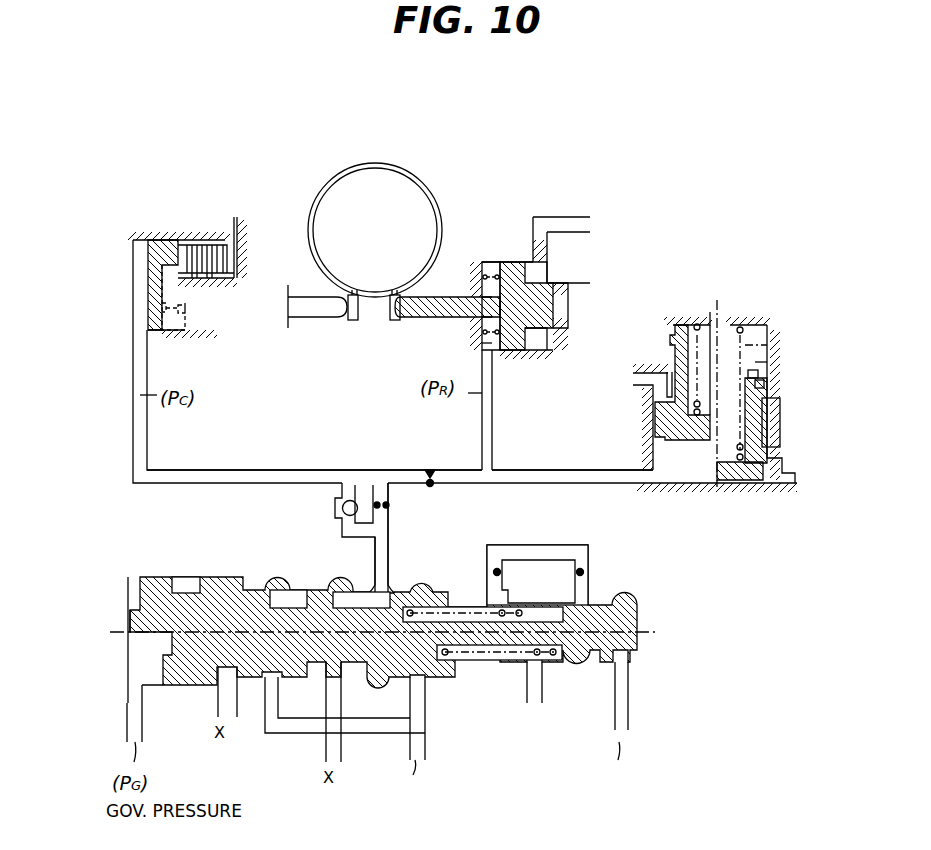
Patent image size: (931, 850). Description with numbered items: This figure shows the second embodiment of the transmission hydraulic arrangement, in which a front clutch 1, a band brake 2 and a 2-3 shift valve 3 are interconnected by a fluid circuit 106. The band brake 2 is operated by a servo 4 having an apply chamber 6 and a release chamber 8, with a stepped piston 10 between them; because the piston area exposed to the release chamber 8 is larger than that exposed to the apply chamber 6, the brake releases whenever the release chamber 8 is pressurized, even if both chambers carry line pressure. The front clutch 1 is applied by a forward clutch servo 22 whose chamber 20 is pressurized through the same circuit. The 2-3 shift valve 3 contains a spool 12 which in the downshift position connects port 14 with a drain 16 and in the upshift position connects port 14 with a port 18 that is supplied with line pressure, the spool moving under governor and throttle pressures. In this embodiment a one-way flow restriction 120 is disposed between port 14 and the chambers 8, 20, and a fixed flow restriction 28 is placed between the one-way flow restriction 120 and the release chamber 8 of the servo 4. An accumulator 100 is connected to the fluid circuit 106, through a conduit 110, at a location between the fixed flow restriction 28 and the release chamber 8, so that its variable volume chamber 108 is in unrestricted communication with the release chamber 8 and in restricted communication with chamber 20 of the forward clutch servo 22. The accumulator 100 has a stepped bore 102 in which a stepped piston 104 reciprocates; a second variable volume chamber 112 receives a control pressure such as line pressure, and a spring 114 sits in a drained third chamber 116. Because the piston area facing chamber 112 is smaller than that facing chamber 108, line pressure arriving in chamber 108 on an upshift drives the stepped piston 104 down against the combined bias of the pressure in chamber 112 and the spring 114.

The front clutch 1 is at (197, 211).
The band brake 2 is at (304, 204).
The chamber 20 is at (133, 272).
The forward clutch servo 22 is at (194, 337).
The servo 4 is at (515, 243).
The stepped piston 10 is at (553, 301).
The release chamber 8 is at (480, 347).
The apply chamber 6 is at (530, 352).
The fluid circuit 106 is at (250, 470).
The conduit 110 is at (560, 468).
The accumulator 100 is at (676, 300).
The stepped bore 102 is at (762, 330).
The spring 114 is at (765, 345).
The third chamber 116 is at (767, 364).
The second variable volume chamber 112 is at (774, 420).
The variable volume chamber 108 is at (702, 485).
The stepped piston 104 is at (765, 485).
The one-way flow restriction 120 is at (334, 520).
The fixed flow restriction 28 is at (430, 487).
The port 14 is at (386, 578).
The 2-3 shift valve 3 is at (612, 578).
The spool 12 is at (140, 617).
The drain 16 is at (330, 680).
The port 18 is at (420, 681).